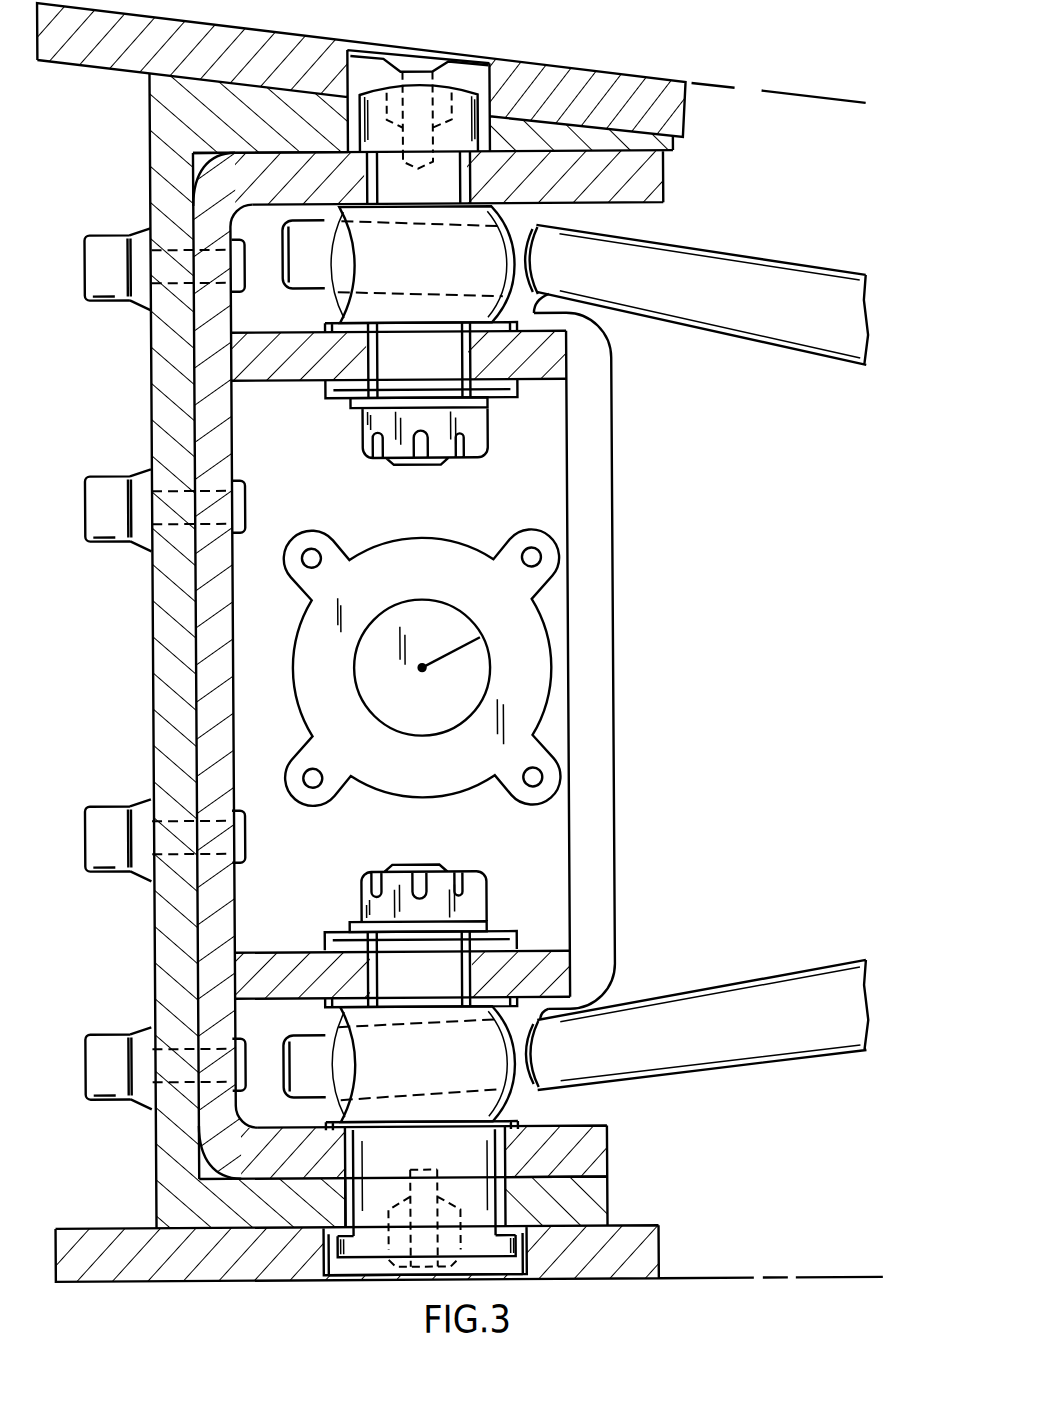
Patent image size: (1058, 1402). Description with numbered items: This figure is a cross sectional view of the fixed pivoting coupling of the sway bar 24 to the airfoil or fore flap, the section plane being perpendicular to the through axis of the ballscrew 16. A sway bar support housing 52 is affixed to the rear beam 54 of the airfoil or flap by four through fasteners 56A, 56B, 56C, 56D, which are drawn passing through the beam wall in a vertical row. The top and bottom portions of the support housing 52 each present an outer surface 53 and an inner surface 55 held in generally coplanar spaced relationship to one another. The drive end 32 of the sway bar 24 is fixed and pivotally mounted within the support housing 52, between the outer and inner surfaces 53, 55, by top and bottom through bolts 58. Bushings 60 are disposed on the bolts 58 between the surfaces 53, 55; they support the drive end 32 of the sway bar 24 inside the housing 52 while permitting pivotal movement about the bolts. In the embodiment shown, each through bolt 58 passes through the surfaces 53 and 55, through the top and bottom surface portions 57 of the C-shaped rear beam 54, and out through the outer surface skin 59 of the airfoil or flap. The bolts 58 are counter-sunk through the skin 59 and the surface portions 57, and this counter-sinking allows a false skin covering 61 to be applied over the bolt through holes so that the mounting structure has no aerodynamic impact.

The ballscrew 16 is at (480, 678).
The sway bar 24 is at (772, 279).
The drive end 32 is at (546, 249).
The sway bar support housing 52 is at (239, 353).
The outer surface 53 is at (671, 189).
The rear beam 54 is at (167, 112).
The inner surface 55 is at (567, 367).
The through fastener 56A is at (112, 245).
The through fastener 56B is at (112, 528).
The through fastener 56C is at (112, 818).
The through fastener 56D is at (112, 1086).
The top and bottom surface portions 57 is at (678, 149).
The through bolt 58 is at (467, 99).
The outer surface skin 59 is at (691, 111).
The bushing 60 is at (345, 303).
The false skin covering 61 is at (437, 52).